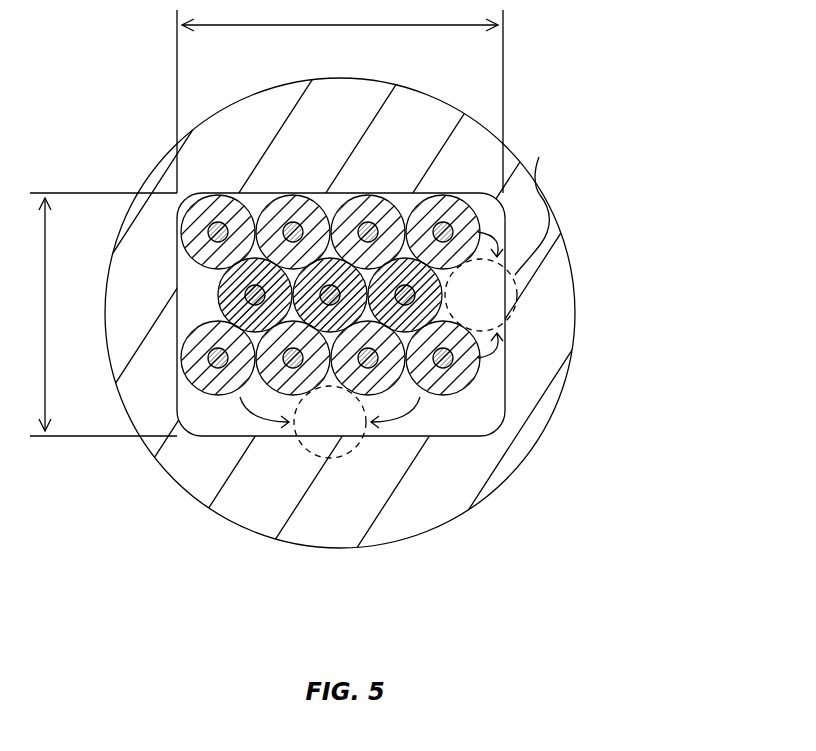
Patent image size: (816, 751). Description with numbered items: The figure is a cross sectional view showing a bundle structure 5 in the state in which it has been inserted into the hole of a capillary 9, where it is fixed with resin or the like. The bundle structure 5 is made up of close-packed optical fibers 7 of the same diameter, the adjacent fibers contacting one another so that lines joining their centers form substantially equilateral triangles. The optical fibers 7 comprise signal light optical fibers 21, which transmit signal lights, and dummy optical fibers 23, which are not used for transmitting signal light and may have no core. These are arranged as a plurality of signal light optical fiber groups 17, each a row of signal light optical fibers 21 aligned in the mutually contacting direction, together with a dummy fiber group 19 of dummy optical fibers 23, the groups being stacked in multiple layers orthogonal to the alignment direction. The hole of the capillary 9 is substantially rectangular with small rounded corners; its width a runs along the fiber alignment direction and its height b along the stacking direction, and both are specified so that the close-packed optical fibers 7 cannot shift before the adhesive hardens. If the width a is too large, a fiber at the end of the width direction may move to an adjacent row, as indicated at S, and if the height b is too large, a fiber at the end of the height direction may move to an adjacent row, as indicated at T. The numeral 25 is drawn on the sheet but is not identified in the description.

The bundle structure 5 is at (523, 127).
The optical fiber 7 is at (270, 560).
The capillary 9 is at (483, 436).
The signal light optical fiber group 17 is at (590, 258).
The dummy fiber group 19 is at (590, 322).
The signal light optical fiber 21 is at (175, 410).
The dummy optical fiber 23 is at (214, 366).
The insulating coating 25 is at (214, 225).
The movement to adjacent row in width direction S is at (532, 205).
The movement to adjacent row in height direction T is at (343, 442).
The width of the hole a is at (340, 97).
The height of the hole b is at (94, 314).